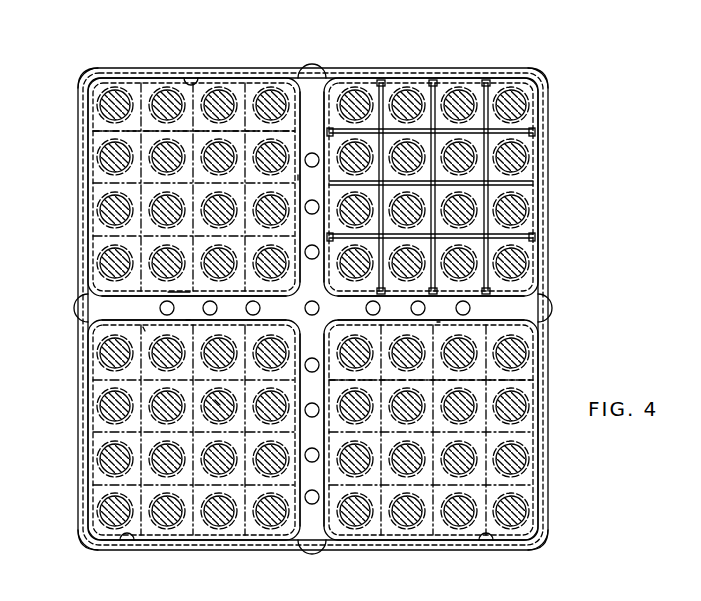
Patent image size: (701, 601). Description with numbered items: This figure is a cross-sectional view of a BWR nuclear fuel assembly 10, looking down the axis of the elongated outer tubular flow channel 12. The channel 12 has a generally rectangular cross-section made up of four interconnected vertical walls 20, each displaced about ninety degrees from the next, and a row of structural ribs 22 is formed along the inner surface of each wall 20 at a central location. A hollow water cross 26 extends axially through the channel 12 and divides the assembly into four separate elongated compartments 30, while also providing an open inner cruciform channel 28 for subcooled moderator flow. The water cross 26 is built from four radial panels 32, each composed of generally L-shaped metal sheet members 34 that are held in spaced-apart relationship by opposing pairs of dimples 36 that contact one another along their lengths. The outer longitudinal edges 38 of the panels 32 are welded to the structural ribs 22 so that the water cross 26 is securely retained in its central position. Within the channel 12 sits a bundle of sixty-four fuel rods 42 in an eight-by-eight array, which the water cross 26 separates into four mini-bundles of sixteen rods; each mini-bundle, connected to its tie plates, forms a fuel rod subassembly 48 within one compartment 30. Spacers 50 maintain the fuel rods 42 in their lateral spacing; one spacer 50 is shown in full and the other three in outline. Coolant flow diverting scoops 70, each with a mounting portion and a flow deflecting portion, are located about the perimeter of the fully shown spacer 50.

The nuclear fuel assembly 10 is at (567, 70).
The outer tubular flow channel 12 is at (552, 443).
The vertical walls 20 is at (505, 73).
The structural ribs 22 is at (316, 72).
The hollow water cross 26 is at (143, 327).
The inner channel 28 is at (215, 400).
The compartments 30 is at (197, 72).
The radial panels 32 is at (240, 72).
The sheet members 34 is at (338, 118).
The dimples 36 is at (298, 175).
The outer longitudinal edges 38 is at (286, 72).
The fuel rods 42 is at (108, 105).
The fuel rod subassembly 48 is at (143, 74).
The spacers 50 is at (92, 163).
The coolant flow diverting scoops 70 is at (450, 85).